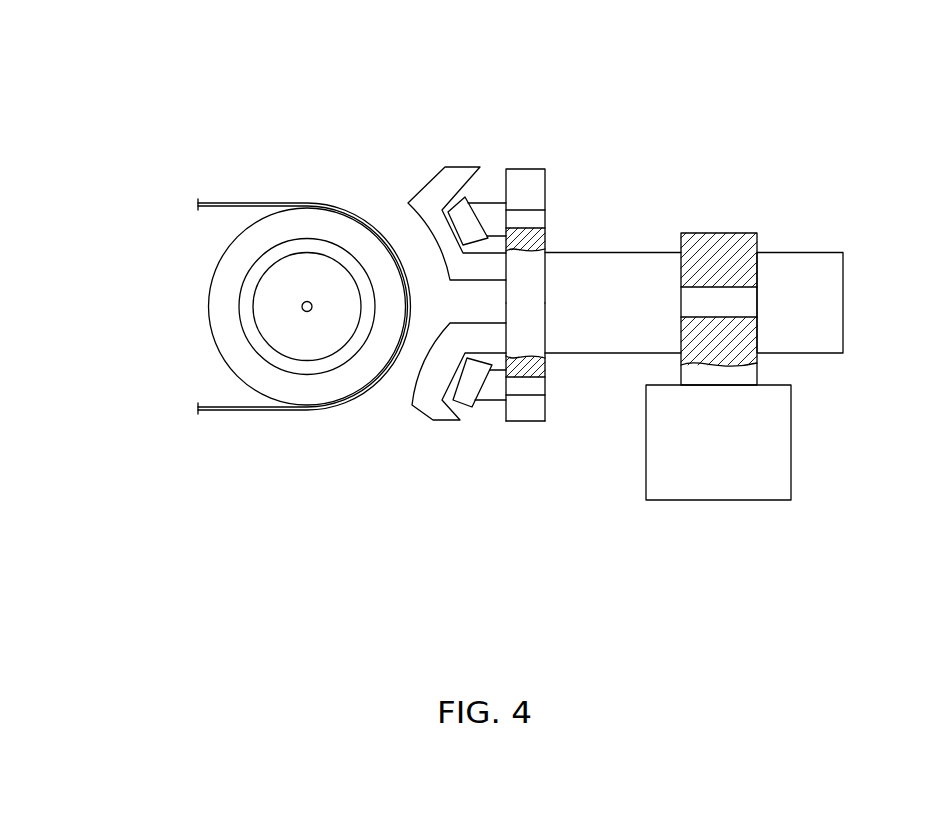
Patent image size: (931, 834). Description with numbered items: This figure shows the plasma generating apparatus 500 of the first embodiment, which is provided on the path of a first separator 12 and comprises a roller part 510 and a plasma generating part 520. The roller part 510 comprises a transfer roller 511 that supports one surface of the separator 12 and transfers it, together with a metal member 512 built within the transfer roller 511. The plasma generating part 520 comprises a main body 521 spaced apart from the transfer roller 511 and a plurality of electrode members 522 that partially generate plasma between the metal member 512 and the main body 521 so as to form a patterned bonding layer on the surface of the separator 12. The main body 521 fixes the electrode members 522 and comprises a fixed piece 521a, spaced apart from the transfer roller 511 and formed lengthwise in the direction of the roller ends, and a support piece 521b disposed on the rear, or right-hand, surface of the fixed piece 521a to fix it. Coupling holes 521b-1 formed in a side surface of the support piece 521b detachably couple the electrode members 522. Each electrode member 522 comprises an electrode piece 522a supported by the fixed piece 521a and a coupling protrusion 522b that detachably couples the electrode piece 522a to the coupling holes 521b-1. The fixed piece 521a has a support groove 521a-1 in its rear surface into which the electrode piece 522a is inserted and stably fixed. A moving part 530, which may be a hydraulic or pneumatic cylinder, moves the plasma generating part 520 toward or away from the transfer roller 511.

The first separator 12 is at (232, 203).
The plasma generating apparatus 500 is at (612, 130).
The roller part 510 is at (108, 233).
The transfer roller 511 is at (238, 265).
The metal member 512 is at (267, 305).
The plasma generating part 520 is at (292, 492).
The main body 521 is at (528, 73).
The fixed piece 521a is at (433, 192).
The support groove 521a-1 is at (452, 402).
The support piece 521b is at (546, 262).
The coupling holes 521b-1 is at (537, 410).
The electrode members 522 is at (548, 517).
The electrode piece 522a is at (472, 408).
The coupling protrusion 522b is at (520, 388).
The moving part 530 is at (805, 260).